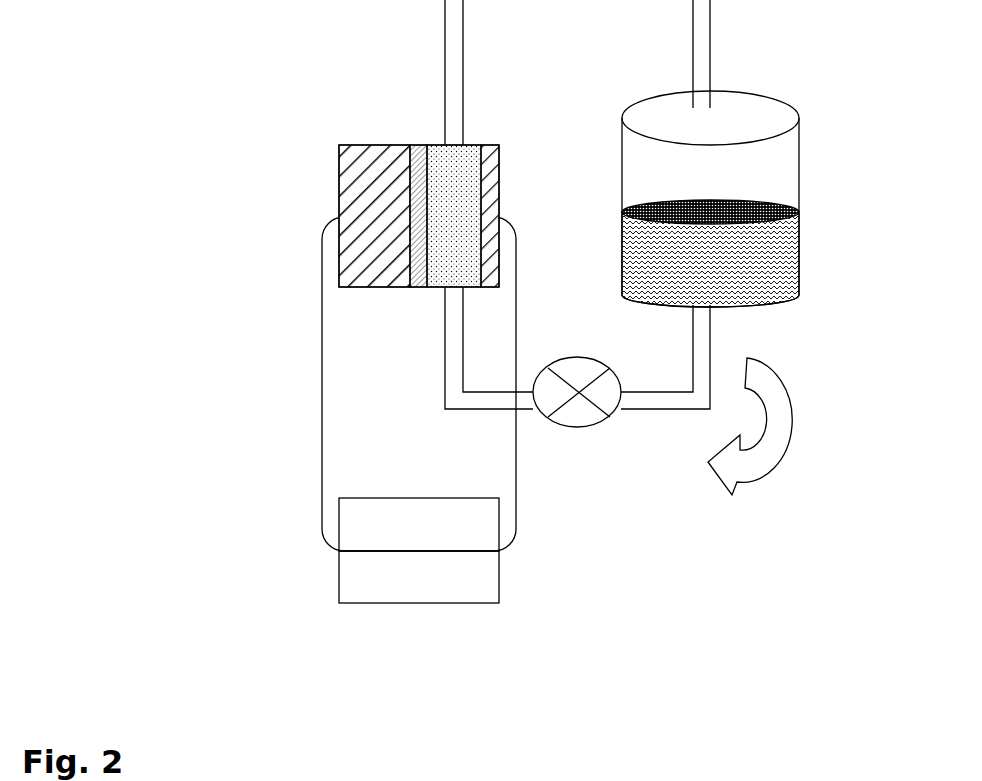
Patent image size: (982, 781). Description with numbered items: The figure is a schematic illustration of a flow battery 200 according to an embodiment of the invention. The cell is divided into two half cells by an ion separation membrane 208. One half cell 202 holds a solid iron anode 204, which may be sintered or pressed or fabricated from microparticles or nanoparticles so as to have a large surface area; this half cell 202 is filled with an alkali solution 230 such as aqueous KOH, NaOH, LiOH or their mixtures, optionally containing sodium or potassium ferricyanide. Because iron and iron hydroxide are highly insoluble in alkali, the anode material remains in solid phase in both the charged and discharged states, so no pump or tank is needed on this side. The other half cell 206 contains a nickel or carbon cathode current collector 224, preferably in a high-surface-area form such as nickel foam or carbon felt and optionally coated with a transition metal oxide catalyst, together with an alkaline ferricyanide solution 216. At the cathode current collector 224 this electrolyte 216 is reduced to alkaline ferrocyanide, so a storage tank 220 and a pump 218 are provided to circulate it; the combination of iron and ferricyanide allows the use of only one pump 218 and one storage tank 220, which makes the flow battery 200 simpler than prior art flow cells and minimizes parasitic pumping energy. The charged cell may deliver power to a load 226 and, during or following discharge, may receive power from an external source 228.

The flow battery 200 is at (197, 143).
The half cell 202 is at (303, 215).
The solid iron anode 204 is at (370, 183).
The other half cell 206 is at (513, 197).
The ion separation membrane 208 is at (418, 145).
The alkaline ferricyanide solution 216 is at (800, 234).
The pump 218 is at (575, 414).
The storage tank 220 is at (777, 163).
The cathode current collector 224 is at (483, 143).
The load 226 is at (396, 498).
The external source 228 is at (434, 603).
The alkali solution 230 is at (390, 145).